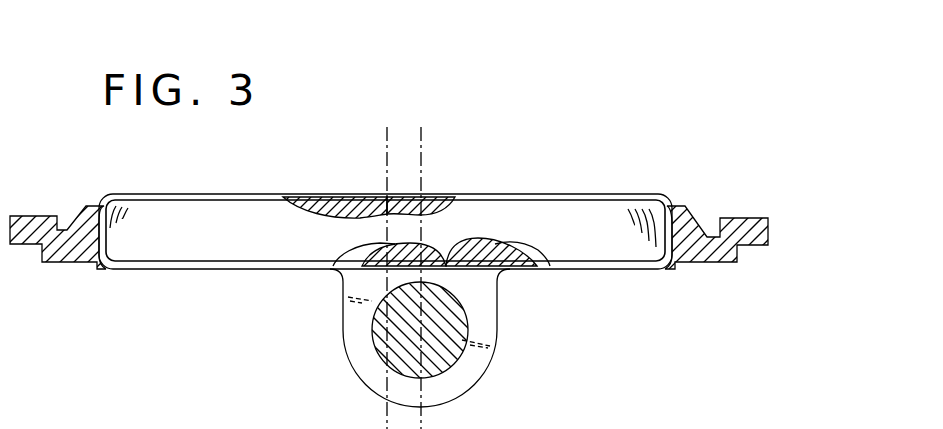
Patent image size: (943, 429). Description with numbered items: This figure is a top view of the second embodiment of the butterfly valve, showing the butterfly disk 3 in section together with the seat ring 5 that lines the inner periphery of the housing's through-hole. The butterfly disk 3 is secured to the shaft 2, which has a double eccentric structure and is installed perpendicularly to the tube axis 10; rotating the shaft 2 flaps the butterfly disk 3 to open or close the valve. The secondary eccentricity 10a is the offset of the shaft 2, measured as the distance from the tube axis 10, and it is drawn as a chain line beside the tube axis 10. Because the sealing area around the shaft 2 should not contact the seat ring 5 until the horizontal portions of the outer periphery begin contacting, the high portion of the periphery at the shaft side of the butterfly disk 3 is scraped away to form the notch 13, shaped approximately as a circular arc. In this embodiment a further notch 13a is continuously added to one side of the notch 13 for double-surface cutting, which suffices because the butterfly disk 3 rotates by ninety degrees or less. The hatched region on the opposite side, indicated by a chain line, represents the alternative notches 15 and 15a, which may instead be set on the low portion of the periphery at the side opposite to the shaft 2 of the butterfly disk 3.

The shaft 2 is at (457, 346).
The butterfly disk 3 is at (584, 197).
The seat ring 5 is at (97, 206).
The tube axis 10 is at (386, 141).
The secondary eccentricity 10a is at (422, 141).
The notch 13 is at (335, 269).
The notch 13a is at (547, 270).
The notch 15 is at (440, 197).
The notch 15a is at (333, 197).